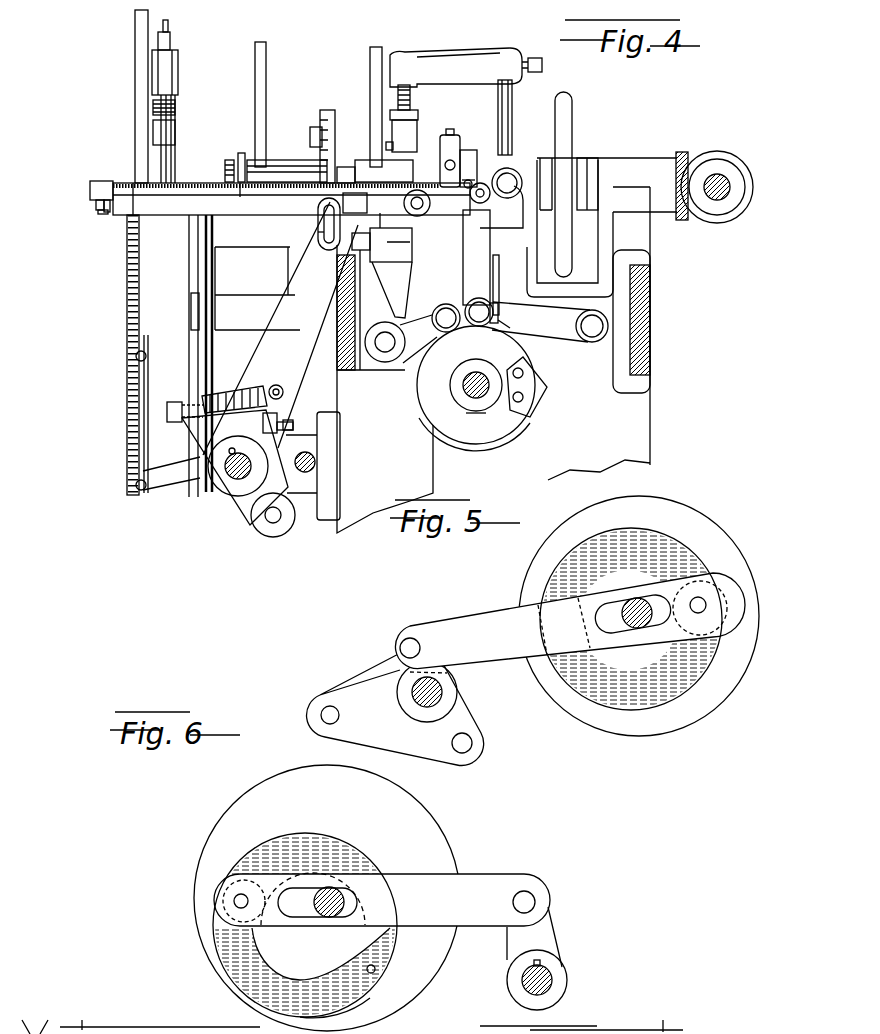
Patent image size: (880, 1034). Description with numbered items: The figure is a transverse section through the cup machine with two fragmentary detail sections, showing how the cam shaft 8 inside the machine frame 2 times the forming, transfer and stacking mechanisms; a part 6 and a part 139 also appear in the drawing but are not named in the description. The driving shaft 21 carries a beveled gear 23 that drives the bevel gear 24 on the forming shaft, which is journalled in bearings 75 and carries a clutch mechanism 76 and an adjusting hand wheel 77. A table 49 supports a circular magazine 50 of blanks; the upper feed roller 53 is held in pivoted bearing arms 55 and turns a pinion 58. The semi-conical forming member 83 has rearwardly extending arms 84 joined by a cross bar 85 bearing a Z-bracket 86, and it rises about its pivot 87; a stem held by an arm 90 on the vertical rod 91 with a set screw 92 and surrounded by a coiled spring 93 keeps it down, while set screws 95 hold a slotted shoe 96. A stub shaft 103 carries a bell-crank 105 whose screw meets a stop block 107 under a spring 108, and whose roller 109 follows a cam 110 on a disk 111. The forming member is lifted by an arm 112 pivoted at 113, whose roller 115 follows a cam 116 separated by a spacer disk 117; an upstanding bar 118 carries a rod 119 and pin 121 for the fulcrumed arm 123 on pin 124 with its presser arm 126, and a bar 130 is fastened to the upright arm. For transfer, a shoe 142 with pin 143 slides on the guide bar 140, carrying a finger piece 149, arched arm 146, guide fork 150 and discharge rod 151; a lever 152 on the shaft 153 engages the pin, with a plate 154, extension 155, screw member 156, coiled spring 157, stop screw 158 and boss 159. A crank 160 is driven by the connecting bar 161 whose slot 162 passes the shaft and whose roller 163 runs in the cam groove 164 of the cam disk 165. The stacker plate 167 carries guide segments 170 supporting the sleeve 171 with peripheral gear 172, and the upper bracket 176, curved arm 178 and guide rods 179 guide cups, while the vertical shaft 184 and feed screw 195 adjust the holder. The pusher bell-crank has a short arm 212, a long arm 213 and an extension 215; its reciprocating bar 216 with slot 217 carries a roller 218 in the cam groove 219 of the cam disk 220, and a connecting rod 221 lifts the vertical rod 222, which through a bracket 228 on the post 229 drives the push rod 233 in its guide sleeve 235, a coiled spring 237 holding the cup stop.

In FIG. 4, the machine frame 2 is at (640, 439).
In FIG. 4, the shaft 6 is at (474, 394).
In FIG. 5, the cam shaft 8 is at (648, 608).
In FIG. 6, the cam shaft 8 is at (345, 902).
In FIG. 4, the longitudinal driving shaft 21 is at (722, 195).
In FIG. 4, the beveled gear 23 is at (740, 165).
In FIG. 4, the bevel gear 24 is at (692, 158).
In FIG. 4, the table 49 is at (132, 187).
In FIG. 4, the circular magazine 50 is at (264, 97).
In FIG. 4, the upper feed roller 53 is at (280, 174).
In FIG. 4, the pivoted bearing arms 55 is at (241, 152).
In FIG. 4, the pinion 58 is at (225, 173).
In FIG. 4, the bearings 75 is at (533, 187).
In FIG. 4, the clutch mechanism 76 is at (582, 168).
In FIG. 4, the adjusting hand wheel 77 is at (573, 120).
In FIG. 4, the forming member 83 is at (385, 160).
In FIG. 4, the rearwardly extending arms 84 is at (470, 153).
In FIG. 4, the cross bar 85 is at (393, 146).
In FIG. 4, the Z-bracket 86 is at (417, 128).
In FIG. 4, the pivot 87 is at (501, 211).
In FIG. 4, the arm 90 is at (462, 56).
In FIG. 4, the vertical rod 91 is at (512, 116).
In FIG. 4, the set screw 92 is at (537, 58).
In FIG. 4, the coiled spring 93 is at (410, 95).
In FIG. 4, the set screws 95 is at (450, 136).
In FIG. 4, the slotted shoe 96 is at (462, 145).
In FIG. 4, the stub shaft 103 is at (385, 352).
In FIG. 4, the bell-crank 105 is at (406, 329).
In FIG. 4, the stop block 107 is at (406, 262).
In FIG. 4, the spring 108 is at (400, 229).
In FIG. 4, the roller 109 is at (476, 385).
In FIG. 4, the cam 110 is at (548, 390).
In FIG. 4, the disk 111 is at (488, 425).
In FIG. 4, the arm 112 is at (541, 322).
In FIG. 4, the pivot 113 is at (591, 338).
In FIG. 4, the roller 115 is at (505, 328).
In FIG. 4, the cam 116 is at (503, 440).
In FIG. 4, the spacer disk 117 is at (492, 306).
In FIG. 4, the upstanding bar 118 is at (455, 296).
In FIG. 4, the rod 119 is at (463, 239).
In FIG. 4, the pin 121 is at (512, 168).
In FIG. 4, the fulcrumed arm 123 is at (470, 196).
In FIG. 4, the pin 124 is at (419, 197).
In FIG. 4, the presser arm 126 is at (386, 203).
In FIG. 4, the bar 130 is at (499, 276).
In FIG. 4, the plate 139 is at (315, 465).
In FIG. 4, the stationary guide bar 140 is at (291, 199).
In FIG. 4, the slidable shoe 142 is at (320, 210).
In FIG. 4, the pin 143 is at (318, 236).
In FIG. 4, the arched arm 146 is at (345, 112).
In FIG. 4, the finger piece 149 is at (312, 137).
In FIG. 4, the guide fork 150 is at (325, 117).
In FIG. 4, the cup discharge rod 151 is at (163, 160).
In FIG. 4, the lever 152 is at (300, 335).
In FIG. 4, the longitudinal shaft 153 is at (240, 480).
In FIG. 5, the longitudinal shaft 153 is at (443, 691).
In FIG. 6, the longitudinal shaft 153 is at (552, 981).
In FIG. 4, the arm or plate 154 is at (235, 467).
In FIG. 4, the extension 155 is at (214, 398).
In FIG. 4, the adjustable screw member 156 is at (172, 402).
In FIG. 4, the coiled spring 157 is at (276, 385).
In FIG. 4, the adjustable stop screw 158 is at (284, 417).
In FIG. 4, the boss 159 is at (292, 420).
In FIG. 6, the crank 160 is at (540, 938).
In FIG. 6, the connecting bar 161 is at (382, 900).
In FIG. 6, the longitudinal slot 162 is at (306, 917).
In FIG. 6, the roller 163 is at (282, 860).
In FIG. 6, the cam groove 164 is at (375, 969).
In FIG. 6, the cam disk 165 is at (397, 792).
In FIG. 4, the plate 167 is at (90, 190).
In FIG. 4, the guide segments 170 is at (96, 205).
In FIG. 4, the cup receiving sleeve 171 is at (100, 213).
In FIG. 4, the peripheral gear 172 is at (104, 207).
In FIG. 4, the upper bracket 176 is at (257, 288).
In FIG. 4, the curved arm 178 is at (194, 321).
In FIG. 4, the cup guide rods 179 is at (198, 250).
In FIG. 4, the vertical shaft 184 is at (207, 278).
In FIG. 4, the vertical feed screw 195 is at (130, 322).
In FIG. 5, the short arm 212 is at (400, 652).
In FIG. 4, the long arm 213 is at (177, 487).
In FIG. 5, the long arm 213 is at (367, 712).
In FIG. 4, the extension 215 is at (262, 534).
In FIG. 5, the extension 215 is at (475, 738).
In FIG. 5, the reciprocating bar 216 is at (570, 623).
In FIG. 5, the longitudinal slot 217 is at (598, 615).
In FIG. 5, the roller 218 is at (722, 572).
In FIG. 5, the cam groove 219 is at (670, 550).
In FIG. 5, the cam disk 220 is at (639, 616).
In FIG. 4, the connecting rod 221 is at (138, 440).
In FIG. 4, the vertical rod 222 is at (135, 42).
In FIG. 4, the stationary bracket 228 is at (178, 74).
In FIG. 4, the vertical post 229 is at (156, 141).
In FIG. 4, the cup push rod 233 is at (168, 26).
In FIG. 4, the guide sleeve 235 is at (170, 43).
In FIG. 4, the coiled spring 237 is at (153, 108).